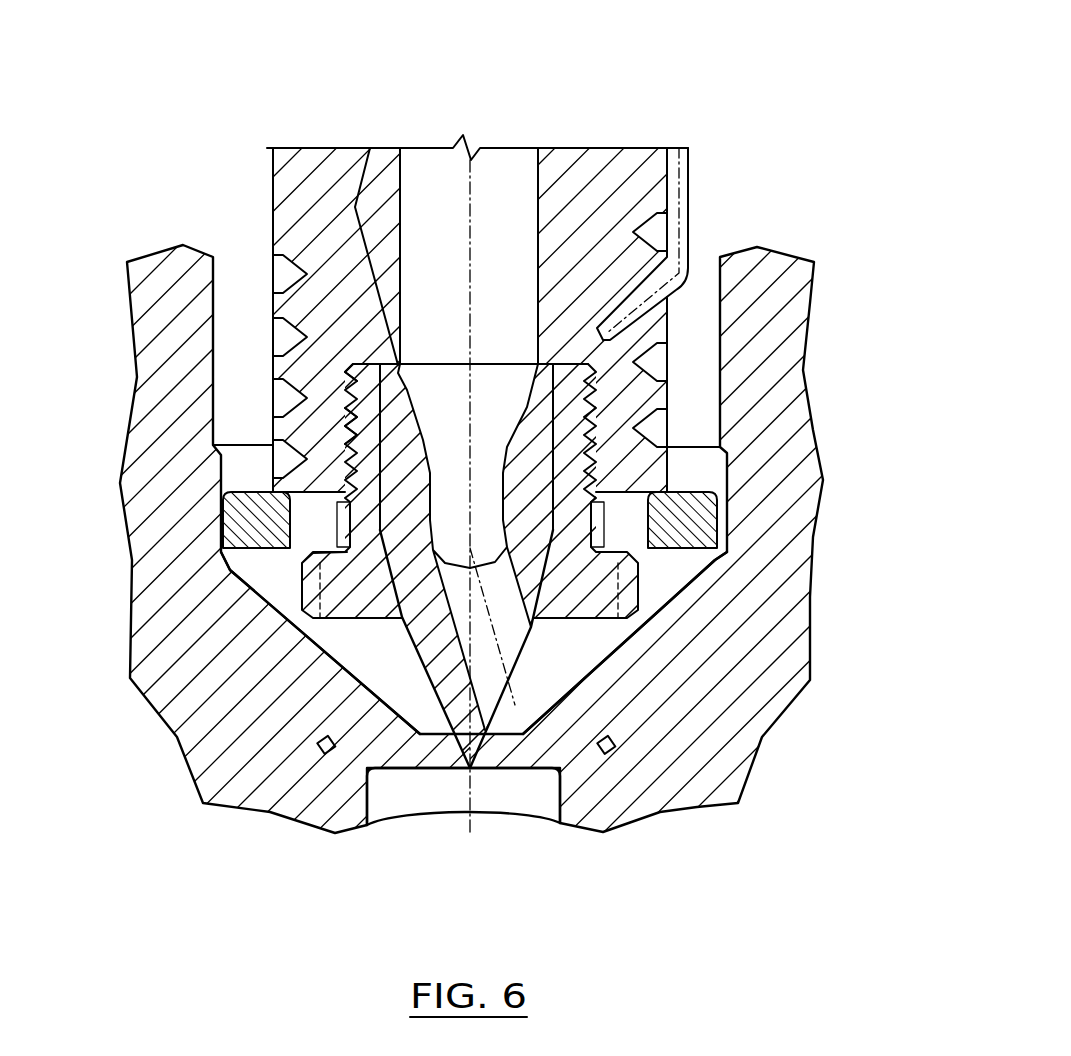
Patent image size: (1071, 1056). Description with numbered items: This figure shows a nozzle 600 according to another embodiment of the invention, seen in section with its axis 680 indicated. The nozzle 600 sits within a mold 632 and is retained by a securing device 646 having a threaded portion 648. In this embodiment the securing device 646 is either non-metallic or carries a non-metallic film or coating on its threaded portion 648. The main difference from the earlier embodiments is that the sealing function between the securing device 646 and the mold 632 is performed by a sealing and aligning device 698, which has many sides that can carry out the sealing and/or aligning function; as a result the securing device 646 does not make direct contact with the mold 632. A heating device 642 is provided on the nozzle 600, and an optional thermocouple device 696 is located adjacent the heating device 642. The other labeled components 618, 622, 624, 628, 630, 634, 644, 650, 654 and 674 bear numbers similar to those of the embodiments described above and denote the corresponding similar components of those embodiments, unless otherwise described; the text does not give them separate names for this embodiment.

The nozzle 600 is at (535, 528).
The nozzle body 618 is at (317, 160).
The melt channel 622 is at (508, 168).
The nozzle insert 624 is at (363, 173).
The nozzle tip insert 628 is at (428, 370).
The nozzle tip 630 is at (445, 747).
The mold 632 is at (782, 670).
The gate insert 634 is at (530, 810).
The heating device 642 is at (658, 232).
The o-ring seals 644 is at (323, 752).
The securing device 646 is at (625, 627).
The threaded portion 648 is at (333, 363).
The thread 650 is at (347, 432).
The retaining nut 654 is at (347, 450).
The cavity wall 674 is at (340, 647).
The axis 680 is at (471, 150).
The thermocouple device 696 is at (683, 190).
The sealing and aligning device 698 is at (705, 514).